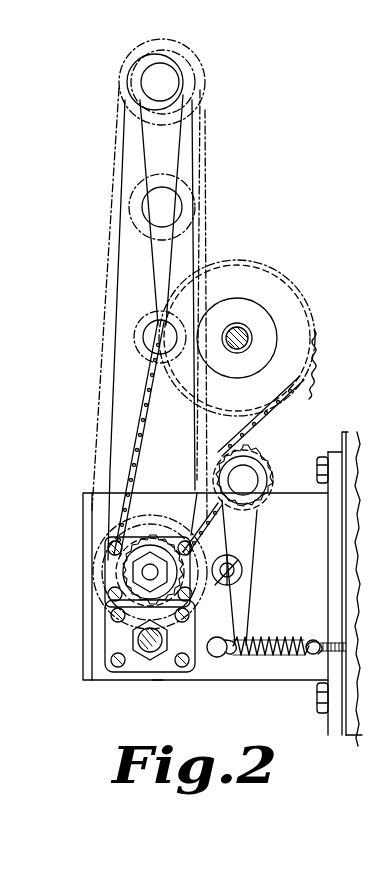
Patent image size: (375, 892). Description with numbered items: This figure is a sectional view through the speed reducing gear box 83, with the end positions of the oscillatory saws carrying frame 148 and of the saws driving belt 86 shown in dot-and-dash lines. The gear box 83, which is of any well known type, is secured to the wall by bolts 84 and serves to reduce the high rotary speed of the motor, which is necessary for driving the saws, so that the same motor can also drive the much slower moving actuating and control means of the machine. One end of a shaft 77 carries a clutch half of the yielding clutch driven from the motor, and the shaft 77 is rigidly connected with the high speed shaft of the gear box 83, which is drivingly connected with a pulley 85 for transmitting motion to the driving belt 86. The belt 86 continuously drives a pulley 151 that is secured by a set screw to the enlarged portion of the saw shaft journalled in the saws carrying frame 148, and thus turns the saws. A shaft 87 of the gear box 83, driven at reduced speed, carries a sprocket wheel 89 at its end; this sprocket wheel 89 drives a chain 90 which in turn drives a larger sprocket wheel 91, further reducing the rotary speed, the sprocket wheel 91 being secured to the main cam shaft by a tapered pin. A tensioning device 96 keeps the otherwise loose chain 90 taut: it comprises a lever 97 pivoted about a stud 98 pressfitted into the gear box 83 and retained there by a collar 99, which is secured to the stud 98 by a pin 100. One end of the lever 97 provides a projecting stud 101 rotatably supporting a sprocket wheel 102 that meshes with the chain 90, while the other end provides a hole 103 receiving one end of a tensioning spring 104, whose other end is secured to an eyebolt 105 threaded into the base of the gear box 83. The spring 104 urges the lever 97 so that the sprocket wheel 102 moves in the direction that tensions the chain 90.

The shaft 77 is at (148, 653).
The gear box 83 is at (280, 668).
The bolts 84 is at (322, 458).
The pulley 85 is at (158, 680).
The driving belt 86 is at (122, 165).
The shaft 87 is at (148, 572).
The sprocket wheel 89 is at (149, 540).
The chain 90 is at (140, 410).
The sprocket wheel 91 is at (298, 353).
The tensioning device 96 is at (240, 558).
The lever 97 is at (230, 612).
The stud 98 is at (233, 572).
The collar 99 is at (227, 555).
The pin 100 is at (244, 568).
The projecting stud 101 is at (246, 482).
The sprocket wheel 102 is at (257, 450).
The hole 103 is at (213, 657).
The tensioning spring 104 is at (277, 635).
The eyebolt 105 is at (307, 642).
The saws carrying frame 148 is at (190, 207).
The pulley 151 is at (145, 83).